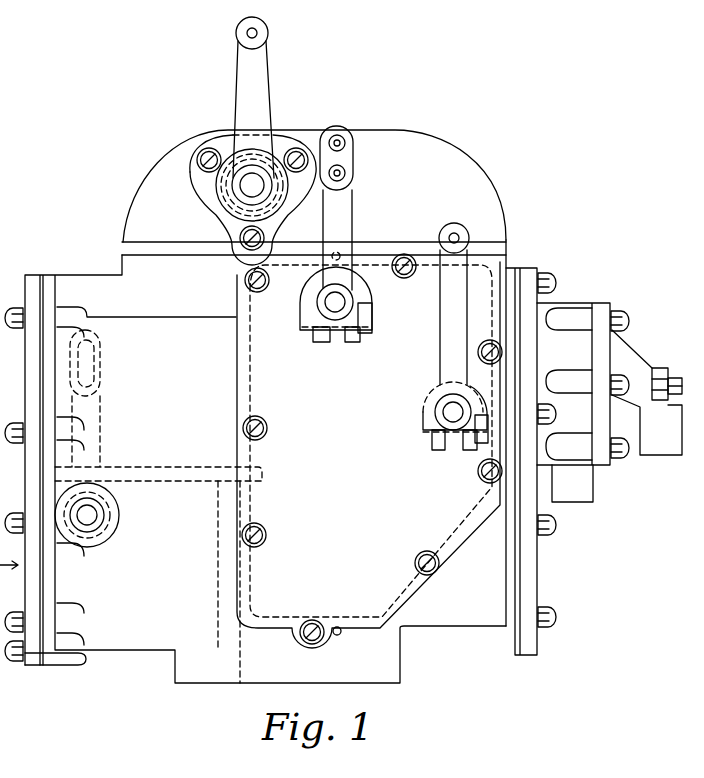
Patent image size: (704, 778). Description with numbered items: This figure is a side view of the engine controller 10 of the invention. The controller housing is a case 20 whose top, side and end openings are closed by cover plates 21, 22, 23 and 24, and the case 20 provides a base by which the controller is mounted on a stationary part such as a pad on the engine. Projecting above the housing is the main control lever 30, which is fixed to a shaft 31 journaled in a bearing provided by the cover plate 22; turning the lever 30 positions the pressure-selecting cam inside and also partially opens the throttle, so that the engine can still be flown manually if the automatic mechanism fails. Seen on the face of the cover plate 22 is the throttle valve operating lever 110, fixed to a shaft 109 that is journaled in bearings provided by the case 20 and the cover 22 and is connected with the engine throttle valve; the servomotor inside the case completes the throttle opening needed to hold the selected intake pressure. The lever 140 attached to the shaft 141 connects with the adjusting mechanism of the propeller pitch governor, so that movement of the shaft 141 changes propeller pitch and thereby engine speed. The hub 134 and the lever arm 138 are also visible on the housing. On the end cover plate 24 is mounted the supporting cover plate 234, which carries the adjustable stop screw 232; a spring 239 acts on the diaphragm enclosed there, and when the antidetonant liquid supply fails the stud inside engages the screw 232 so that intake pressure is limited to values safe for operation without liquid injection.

The transmission assembly 10 is at (5, 283).
The case 20 is at (468, 629).
The cover plate 21 is at (144, 195).
The cover plate 22 is at (237, 389).
The cover plate 23 is at (34, 661).
The cover plate 24 is at (540, 569).
The main control lever 30 is at (337, 127).
The shaft 31 is at (330, 303).
The shaft 109 is at (445, 412).
The throttle valve operating lever 110 is at (440, 350).
The shaft hub 134 is at (250, 187).
The lever 138 is at (240, 91).
The lever 140 is at (101, 406).
The shaft 141 is at (90, 520).
The stop screw 232 is at (684, 377).
The supporting cover plate 234 is at (606, 460).
The spring 239 is at (658, 368).